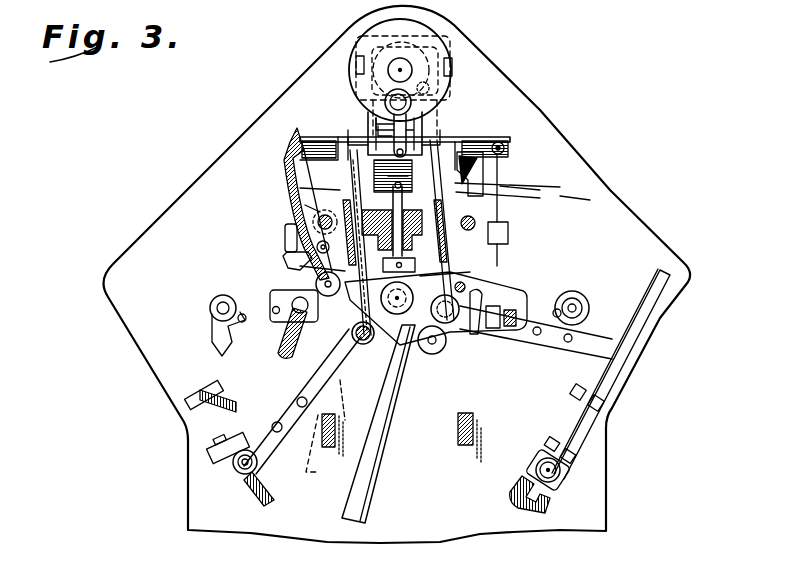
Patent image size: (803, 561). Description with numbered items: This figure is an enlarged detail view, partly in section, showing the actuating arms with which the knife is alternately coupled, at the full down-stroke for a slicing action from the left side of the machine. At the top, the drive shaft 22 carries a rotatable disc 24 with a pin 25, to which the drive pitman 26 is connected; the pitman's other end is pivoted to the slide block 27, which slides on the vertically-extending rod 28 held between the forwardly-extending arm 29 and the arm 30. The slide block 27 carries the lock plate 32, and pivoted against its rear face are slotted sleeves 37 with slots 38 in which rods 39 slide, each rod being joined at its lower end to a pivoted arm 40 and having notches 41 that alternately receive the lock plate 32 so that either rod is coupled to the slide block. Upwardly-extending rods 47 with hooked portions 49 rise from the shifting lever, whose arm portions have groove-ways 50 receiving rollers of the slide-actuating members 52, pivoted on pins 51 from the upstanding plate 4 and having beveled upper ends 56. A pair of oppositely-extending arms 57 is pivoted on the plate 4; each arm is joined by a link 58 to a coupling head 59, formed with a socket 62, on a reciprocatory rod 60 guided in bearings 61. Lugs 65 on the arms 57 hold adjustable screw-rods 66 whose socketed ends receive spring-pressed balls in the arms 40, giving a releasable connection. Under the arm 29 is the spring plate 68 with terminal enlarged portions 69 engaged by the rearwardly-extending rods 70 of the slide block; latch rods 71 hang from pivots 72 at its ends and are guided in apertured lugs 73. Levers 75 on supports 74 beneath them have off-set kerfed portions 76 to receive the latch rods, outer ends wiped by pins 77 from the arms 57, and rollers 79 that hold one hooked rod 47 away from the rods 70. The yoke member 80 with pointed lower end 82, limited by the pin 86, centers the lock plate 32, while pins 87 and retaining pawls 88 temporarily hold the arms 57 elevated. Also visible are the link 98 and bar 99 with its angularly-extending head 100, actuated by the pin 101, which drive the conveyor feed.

The upstanding plate 4 is at (397, 274).
The drive shaft 22 is at (412, 68).
The rotatable disc 24 is at (454, 64).
The pin 25 is at (414, 101).
The drive pitman 26 is at (408, 130).
The slide block 27 is at (376, 214).
The vertically-extending rod 28 is at (380, 196).
The forwardly-extending arm 29 is at (376, 120).
The arm 30 is at (472, 273).
The lock plate 32 is at (316, 246).
The sleeves 37 is at (472, 194).
The slot 38 is at (508, 224).
The rods 39 is at (432, 150).
The pivoted arm 40 is at (472, 334).
The notches 41 is at (530, 190).
The upwardly-extending rods 47 is at (306, 206).
The hooked portions 49 is at (300, 180).
The groove-ways 50 is at (383, 346).
The pins 51 is at (438, 353).
The slide-actuating members 52 is at (300, 268).
The beveled upper ends 56 is at (515, 151).
The oppositely-extending arms 57 is at (538, 352).
The link 58 is at (268, 497).
The coupling head 59 is at (560, 465).
The reciprocatory rod 60 is at (645, 318).
The bearings 61 is at (214, 390).
The socket 62 is at (526, 488).
The lugs 65 is at (338, 388).
The adjustable screw-rods 66 is at (326, 406).
The spring plate 68 is at (312, 140).
The terminal enlarged portions 69 is at (485, 160).
The rearwardly-extending rods 70 is at (317, 222).
The latch rods 71 is at (300, 188).
The pivot 72 is at (505, 146).
The apertured lugs 73 is at (284, 244).
The supports 74 is at (284, 326).
The levers 75 is at (352, 336).
The off-set kerfed portion 76 is at (287, 256).
The pins 77 is at (301, 397).
The rollers 79 is at (300, 256).
The yoke member 80 is at (288, 152).
The pointed lower end 82 is at (588, 198).
The pin 86 is at (383, 131).
The rearwardly-extending pins 87 is at (280, 433).
The retaining pawls 88 is at (214, 345).
The link 98 is at (320, 460).
The bar 99 is at (353, 102).
The angularly-extending head 100 is at (450, 40).
The pin 101 is at (455, 86).